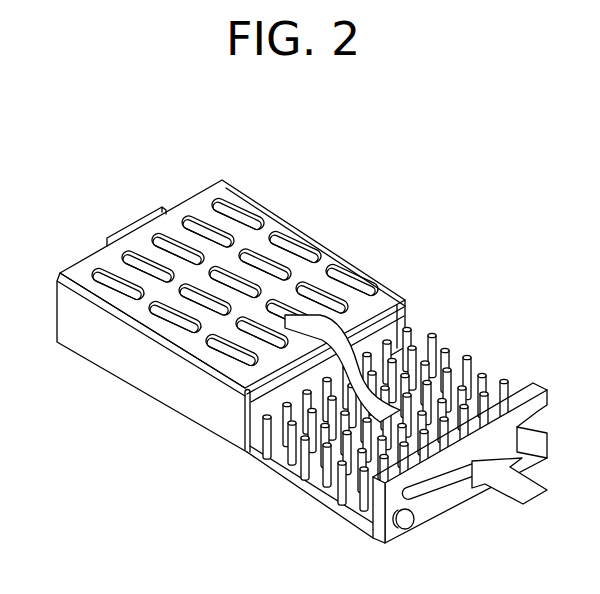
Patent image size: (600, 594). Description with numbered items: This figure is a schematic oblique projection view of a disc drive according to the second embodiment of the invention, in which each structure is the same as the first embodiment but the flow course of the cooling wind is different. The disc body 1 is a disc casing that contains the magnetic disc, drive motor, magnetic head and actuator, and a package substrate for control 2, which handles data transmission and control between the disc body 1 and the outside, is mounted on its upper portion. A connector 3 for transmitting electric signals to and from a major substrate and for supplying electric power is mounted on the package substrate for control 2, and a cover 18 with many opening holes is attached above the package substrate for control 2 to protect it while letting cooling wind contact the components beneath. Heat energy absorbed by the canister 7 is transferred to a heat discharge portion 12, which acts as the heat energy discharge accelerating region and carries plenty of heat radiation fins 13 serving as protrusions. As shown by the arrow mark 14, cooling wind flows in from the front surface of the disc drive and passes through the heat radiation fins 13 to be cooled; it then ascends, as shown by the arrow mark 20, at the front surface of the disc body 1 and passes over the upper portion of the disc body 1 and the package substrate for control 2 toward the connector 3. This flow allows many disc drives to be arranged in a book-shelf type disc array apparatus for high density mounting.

The disc body 1 is at (400, 322).
The package substrate for control 2 is at (360, 287).
The connector 3 is at (127, 222).
The canister 7 is at (110, 353).
The heat discharge portion 12 is at (263, 467).
The heat radiation fins 13 is at (330, 470).
The arrow mark 14 is at (505, 485).
The cover 18 is at (268, 237).
The arrow mark 20 is at (245, 388).